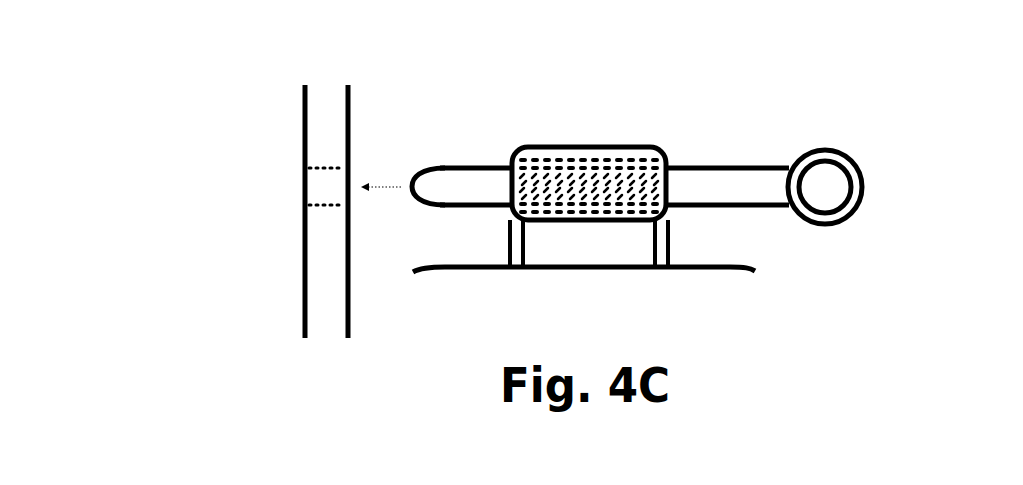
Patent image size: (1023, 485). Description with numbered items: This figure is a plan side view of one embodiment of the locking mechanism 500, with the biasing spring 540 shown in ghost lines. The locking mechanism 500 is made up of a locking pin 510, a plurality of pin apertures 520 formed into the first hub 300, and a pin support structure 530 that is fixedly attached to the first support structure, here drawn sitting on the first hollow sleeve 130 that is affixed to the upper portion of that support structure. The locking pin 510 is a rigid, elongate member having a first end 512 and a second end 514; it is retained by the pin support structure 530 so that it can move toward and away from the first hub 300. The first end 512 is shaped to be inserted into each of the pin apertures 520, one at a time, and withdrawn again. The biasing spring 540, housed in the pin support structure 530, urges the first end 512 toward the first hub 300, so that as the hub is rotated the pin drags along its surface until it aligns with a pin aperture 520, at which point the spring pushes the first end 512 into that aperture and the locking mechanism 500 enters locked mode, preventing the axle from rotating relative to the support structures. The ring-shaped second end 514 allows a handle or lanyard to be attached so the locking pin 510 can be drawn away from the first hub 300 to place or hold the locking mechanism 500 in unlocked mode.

The first hollow sleeve 130 is at (615, 282).
The first hub 300 is at (304, 112).
The locking mechanism 500 is at (852, 130).
The locking pin 510 is at (495, 178).
The first end 512 is at (423, 175).
The second end 514 is at (790, 158).
The pin apertures 520 is at (322, 182).
The pin support structure 530 is at (567, 142).
The biasing spring 540 is at (596, 190).